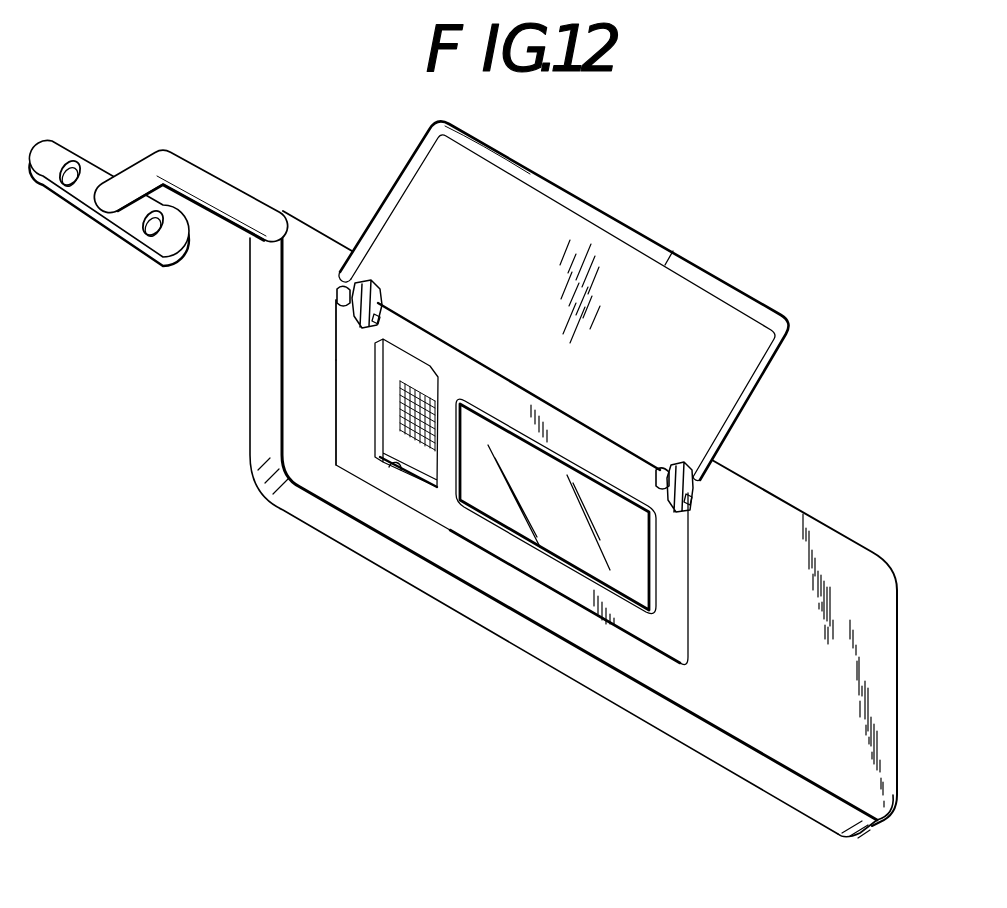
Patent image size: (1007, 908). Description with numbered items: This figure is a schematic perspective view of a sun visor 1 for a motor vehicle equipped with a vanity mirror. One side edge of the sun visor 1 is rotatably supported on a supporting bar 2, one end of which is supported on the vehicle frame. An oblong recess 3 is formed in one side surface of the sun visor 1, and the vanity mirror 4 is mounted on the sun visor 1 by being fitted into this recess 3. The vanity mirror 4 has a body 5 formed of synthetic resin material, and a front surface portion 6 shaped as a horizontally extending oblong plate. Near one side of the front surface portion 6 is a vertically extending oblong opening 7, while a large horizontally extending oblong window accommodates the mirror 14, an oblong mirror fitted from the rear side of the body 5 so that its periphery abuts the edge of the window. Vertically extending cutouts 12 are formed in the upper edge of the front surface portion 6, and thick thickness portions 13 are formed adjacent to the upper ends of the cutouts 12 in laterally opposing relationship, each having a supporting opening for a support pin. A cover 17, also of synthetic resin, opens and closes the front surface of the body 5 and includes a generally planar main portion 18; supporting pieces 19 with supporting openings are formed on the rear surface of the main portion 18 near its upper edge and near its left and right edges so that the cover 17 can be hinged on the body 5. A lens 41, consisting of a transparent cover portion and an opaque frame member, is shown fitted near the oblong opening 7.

The sun visor 1 is at (790, 497).
The supporting bar 2 is at (226, 184).
The oblong recess 3 is at (345, 368).
The vanity mirror 4 is at (444, 482).
The body 5 is at (335, 330).
The front surface portion 6 is at (673, 620).
The vertically extending oblong opening 7 is at (400, 470).
The cutout 12 is at (377, 313).
The thick thickness portion 13 is at (338, 287).
The mirror 14 is at (553, 540).
The cover 17 is at (612, 217).
The main portion 18 is at (693, 300).
The supporting piece 19 is at (370, 297).
The lens 41 is at (427, 370).